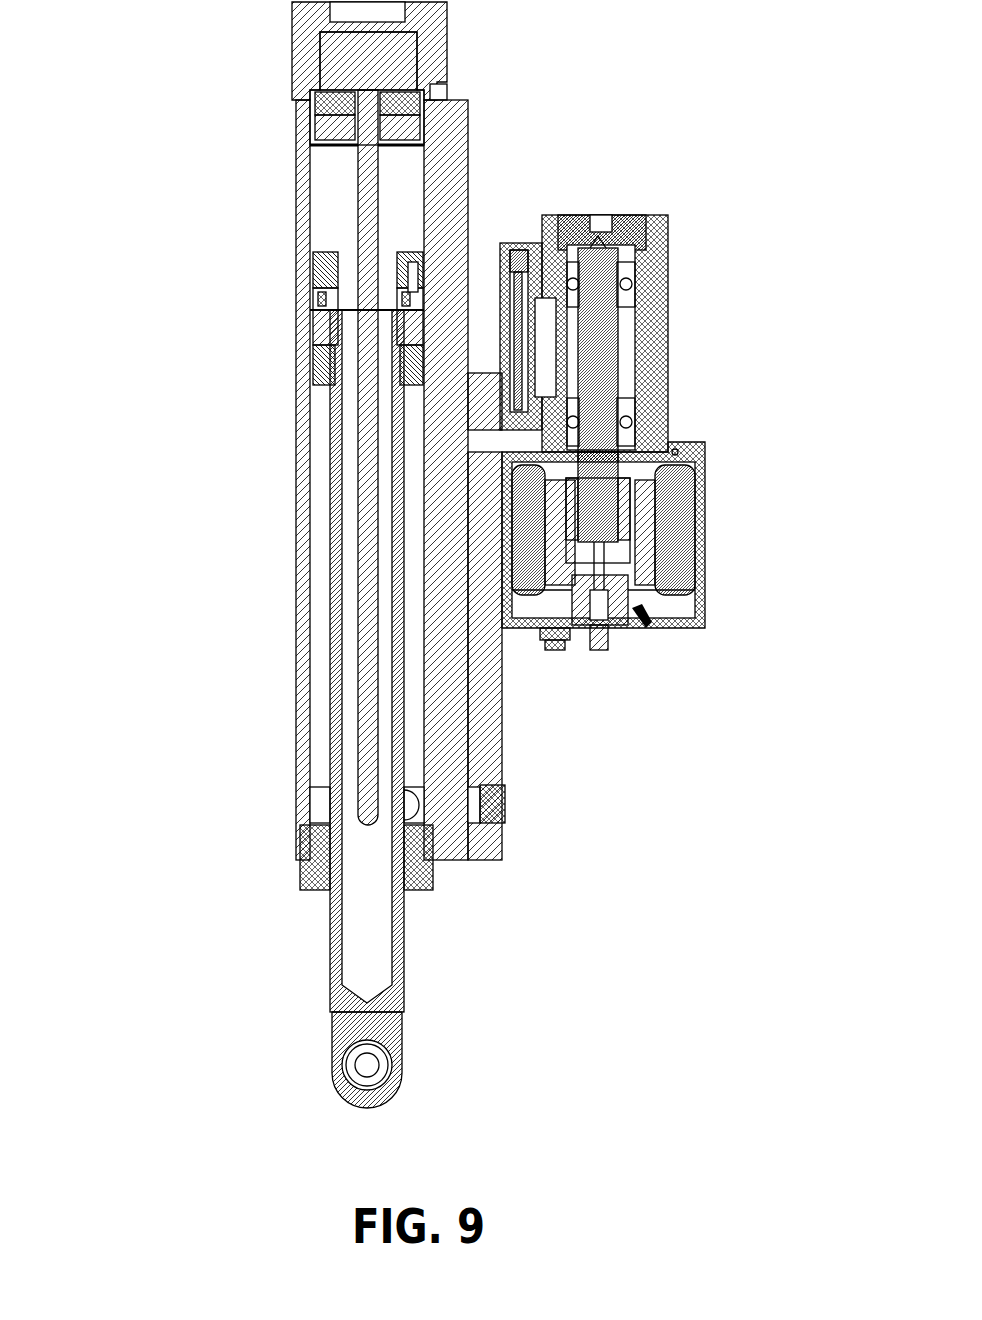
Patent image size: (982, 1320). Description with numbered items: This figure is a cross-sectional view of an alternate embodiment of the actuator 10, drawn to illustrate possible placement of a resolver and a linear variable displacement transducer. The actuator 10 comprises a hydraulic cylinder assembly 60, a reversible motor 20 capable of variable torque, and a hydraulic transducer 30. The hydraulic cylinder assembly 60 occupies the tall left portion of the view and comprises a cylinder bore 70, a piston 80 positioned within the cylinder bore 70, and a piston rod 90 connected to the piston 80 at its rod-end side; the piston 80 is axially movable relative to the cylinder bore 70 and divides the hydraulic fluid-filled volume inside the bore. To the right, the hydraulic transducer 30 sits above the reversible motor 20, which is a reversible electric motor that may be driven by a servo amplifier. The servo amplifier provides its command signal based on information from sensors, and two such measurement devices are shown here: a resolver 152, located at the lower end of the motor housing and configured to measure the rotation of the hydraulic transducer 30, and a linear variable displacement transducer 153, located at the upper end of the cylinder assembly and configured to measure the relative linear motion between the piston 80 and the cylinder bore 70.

The actuator 10 is at (440, 555).
The reversible motor 20 is at (700, 525).
The hydraulic transducer 30 is at (665, 330).
The hydraulic cylinder assembly 60 is at (285, 555).
The cylinder bore 70 is at (423, 235).
The piston 80 is at (320, 315).
The piston rod 90 is at (330, 595).
The resolver 152 is at (650, 628).
The linear variable displacement transducer 153 is at (365, 170).